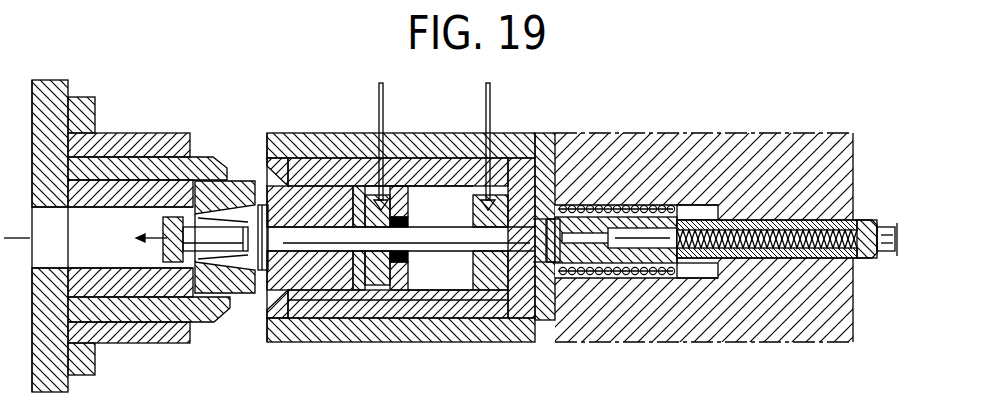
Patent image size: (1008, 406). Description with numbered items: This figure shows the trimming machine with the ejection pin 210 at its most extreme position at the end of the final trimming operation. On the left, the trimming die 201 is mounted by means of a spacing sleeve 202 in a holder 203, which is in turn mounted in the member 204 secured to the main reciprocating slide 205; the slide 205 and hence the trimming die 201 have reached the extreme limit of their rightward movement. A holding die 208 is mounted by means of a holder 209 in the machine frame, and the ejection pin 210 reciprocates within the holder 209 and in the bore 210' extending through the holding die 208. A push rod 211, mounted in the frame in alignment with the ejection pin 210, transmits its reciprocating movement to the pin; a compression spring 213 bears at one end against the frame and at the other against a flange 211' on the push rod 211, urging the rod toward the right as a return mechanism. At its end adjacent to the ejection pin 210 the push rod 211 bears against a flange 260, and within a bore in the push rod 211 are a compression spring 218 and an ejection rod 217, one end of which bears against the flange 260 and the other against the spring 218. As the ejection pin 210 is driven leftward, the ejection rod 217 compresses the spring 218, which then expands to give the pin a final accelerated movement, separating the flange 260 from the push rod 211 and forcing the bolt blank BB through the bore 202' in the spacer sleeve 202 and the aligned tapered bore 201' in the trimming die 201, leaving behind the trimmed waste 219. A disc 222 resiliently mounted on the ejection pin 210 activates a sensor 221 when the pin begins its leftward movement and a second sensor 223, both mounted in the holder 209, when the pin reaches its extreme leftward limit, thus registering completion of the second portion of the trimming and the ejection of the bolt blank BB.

The trimming die 201 is at (227, 204).
The tapered bore 201' is at (212, 283).
The spacing sleeve 202 is at (130, 281).
The bore 202' is at (112, 237).
The holder 203 is at (197, 165).
The member 204 is at (144, 140).
The main reciprocating slide 205 is at (72, 96).
The holding die 208 is at (342, 289).
The holder 209 is at (316, 176).
The ejection pin 210 is at (412, 254).
The bore 210' is at (316, 238).
The push rod 211 is at (777, 221).
The flange 211' is at (699, 271).
The compression spring 213 is at (646, 181).
The ejection rod 217 is at (686, 210).
The compression spring 218 is at (789, 258).
The trimmed waste 219 is at (262, 272).
The sensor 221 is at (472, 194).
The disc 222 is at (414, 280).
The second sensor 223 is at (380, 186).
The flange 260 is at (578, 211).
The bolt blank BB is at (168, 248).